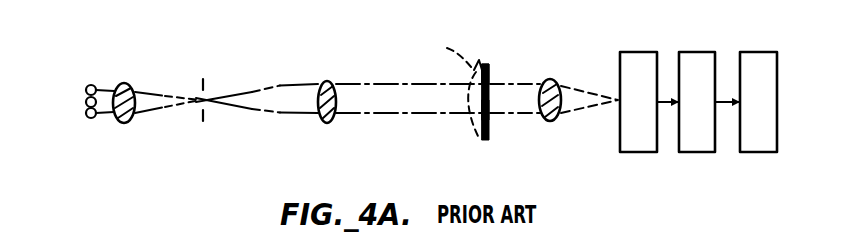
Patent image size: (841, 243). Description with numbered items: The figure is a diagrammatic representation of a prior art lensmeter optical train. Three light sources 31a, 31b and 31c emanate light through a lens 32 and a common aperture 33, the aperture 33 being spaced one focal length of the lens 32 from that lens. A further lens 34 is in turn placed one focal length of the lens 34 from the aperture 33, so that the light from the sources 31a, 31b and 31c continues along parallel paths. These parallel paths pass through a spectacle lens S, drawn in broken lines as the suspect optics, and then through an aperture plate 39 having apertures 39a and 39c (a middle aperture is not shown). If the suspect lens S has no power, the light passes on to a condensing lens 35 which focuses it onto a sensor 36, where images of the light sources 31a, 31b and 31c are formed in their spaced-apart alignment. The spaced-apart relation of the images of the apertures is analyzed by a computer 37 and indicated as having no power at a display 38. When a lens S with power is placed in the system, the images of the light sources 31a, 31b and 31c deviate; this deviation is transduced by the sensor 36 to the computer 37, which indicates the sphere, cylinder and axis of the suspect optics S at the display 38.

The light source 31a is at (87, 87).
The light source 31b is at (85, 102).
The light source 31c is at (87, 117).
The lens 32 is at (123, 84).
The common aperture 33 is at (207, 85).
The lens 34 is at (327, 82).
The condensing lens 35 is at (552, 79).
The sensor 36 is at (625, 52).
The computer 37 is at (687, 52).
The display 38 is at (747, 52).
The aperture plate 39 is at (487, 133).
The aperture 39a is at (491, 112).
The aperture 39c is at (492, 74).
The spectacle lens S is at (457, 86).